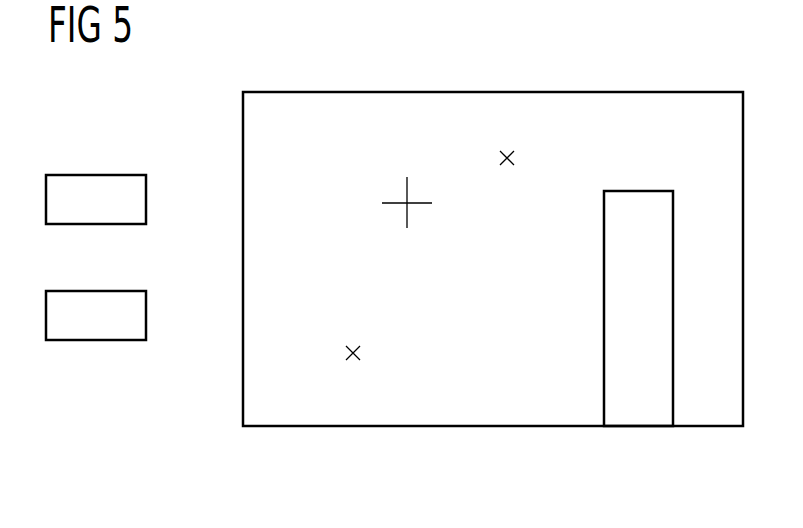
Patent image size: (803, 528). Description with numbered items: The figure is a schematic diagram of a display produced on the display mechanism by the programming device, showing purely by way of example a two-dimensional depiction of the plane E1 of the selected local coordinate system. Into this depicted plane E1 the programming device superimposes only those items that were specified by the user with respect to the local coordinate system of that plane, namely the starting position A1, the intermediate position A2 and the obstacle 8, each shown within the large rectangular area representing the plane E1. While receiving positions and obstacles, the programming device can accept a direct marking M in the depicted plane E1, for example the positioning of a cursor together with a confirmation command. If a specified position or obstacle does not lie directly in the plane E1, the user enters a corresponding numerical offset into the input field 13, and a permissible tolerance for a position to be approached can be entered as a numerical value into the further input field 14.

The input field 13 is at (97, 175).
The further input field 14 is at (97, 340).
The plane E1 is at (318, 92).
The direct marking M is at (407, 203).
The intermediate position A2 is at (507, 158).
The starting position A1 is at (350, 363).
The obstacle 8 is at (635, 393).